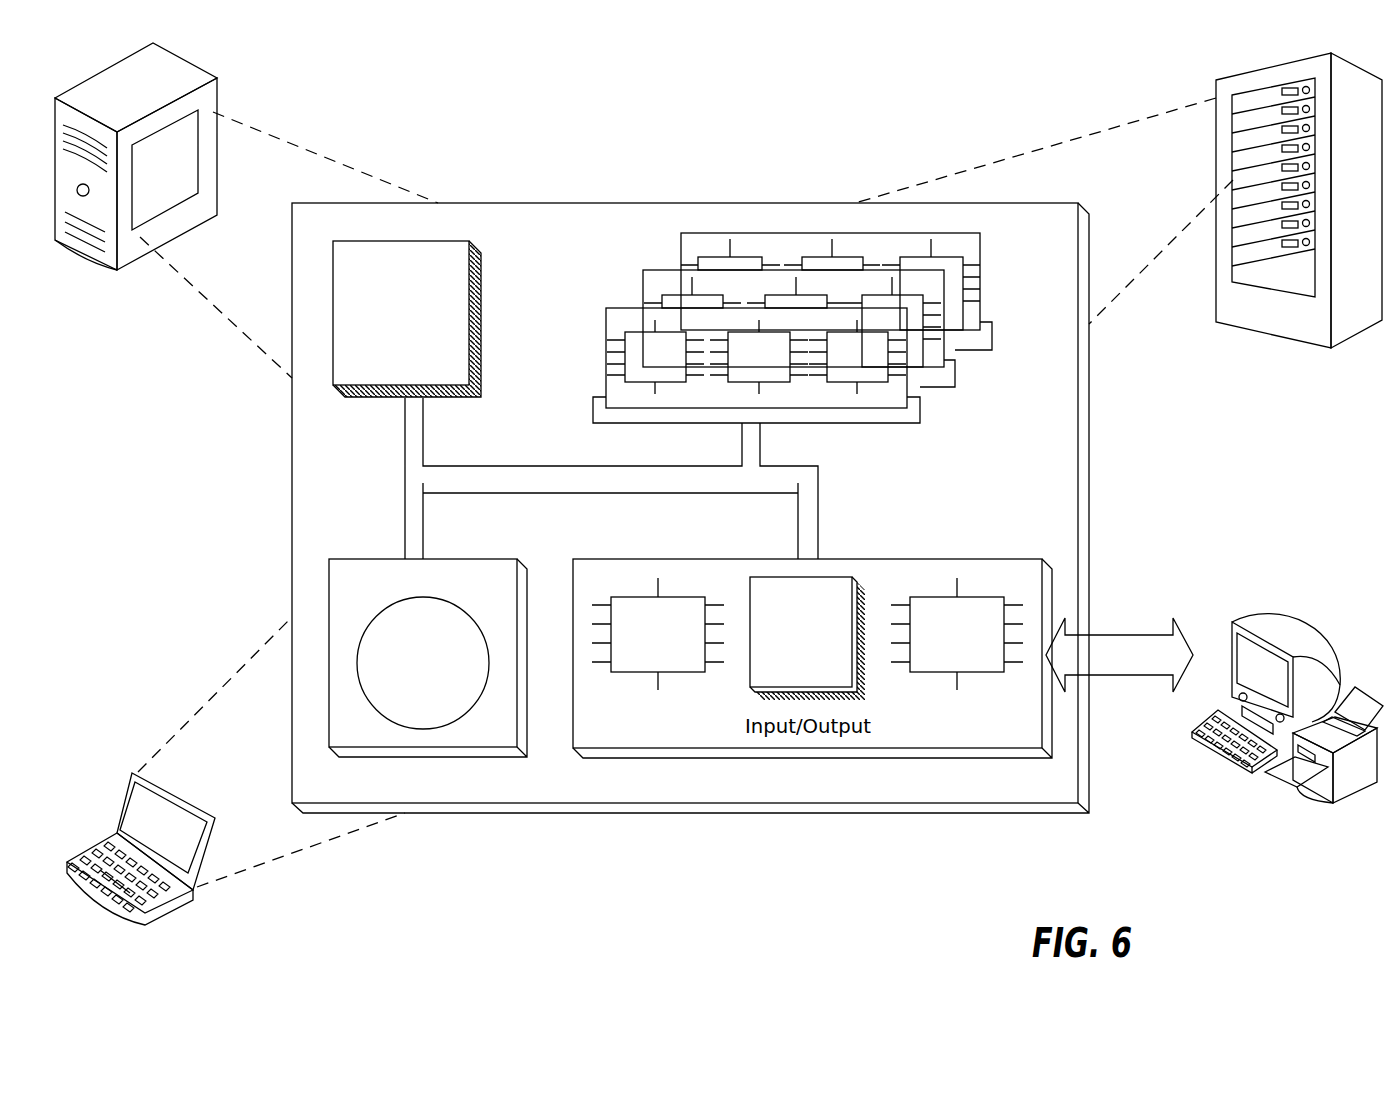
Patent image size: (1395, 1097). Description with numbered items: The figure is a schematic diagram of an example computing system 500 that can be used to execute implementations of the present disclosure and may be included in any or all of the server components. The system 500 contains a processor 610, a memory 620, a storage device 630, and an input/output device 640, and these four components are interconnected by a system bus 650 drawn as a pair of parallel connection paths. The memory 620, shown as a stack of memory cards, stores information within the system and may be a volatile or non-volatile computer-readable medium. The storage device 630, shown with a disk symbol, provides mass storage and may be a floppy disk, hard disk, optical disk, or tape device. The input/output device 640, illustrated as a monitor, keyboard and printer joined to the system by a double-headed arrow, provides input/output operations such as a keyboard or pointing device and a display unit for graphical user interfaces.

The computer system 500 is at (499, 115).
The processor 610 is at (407, 319).
The memory 620 is at (985, 381).
The storage device 630 is at (428, 658).
The input/output device 640 is at (1230, 623).
The system bus 650 is at (606, 484).